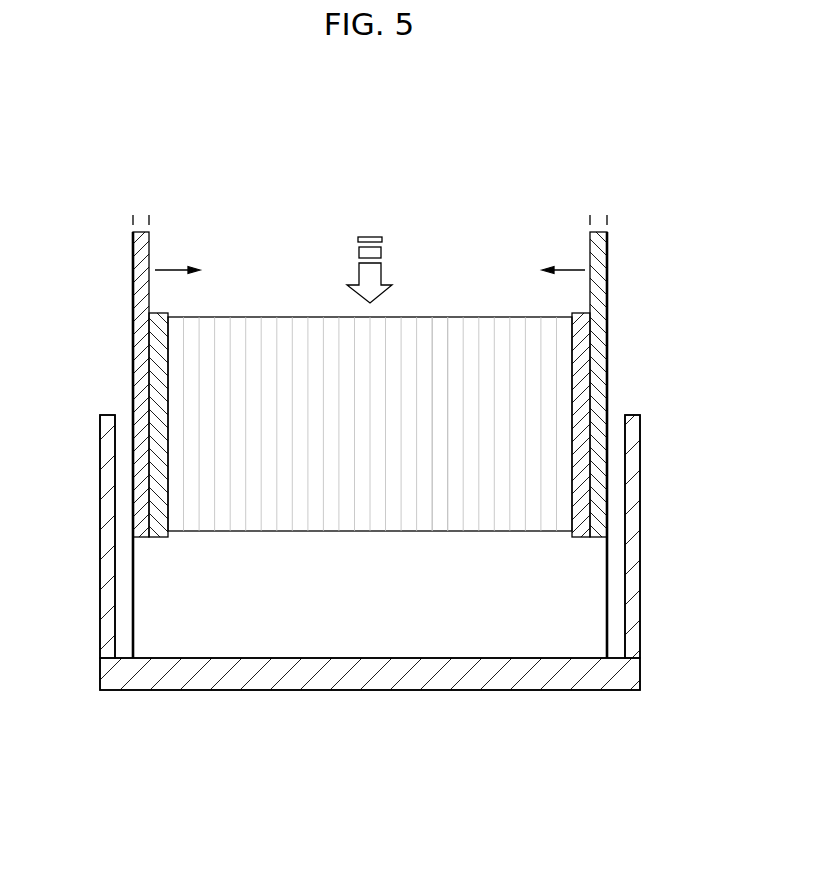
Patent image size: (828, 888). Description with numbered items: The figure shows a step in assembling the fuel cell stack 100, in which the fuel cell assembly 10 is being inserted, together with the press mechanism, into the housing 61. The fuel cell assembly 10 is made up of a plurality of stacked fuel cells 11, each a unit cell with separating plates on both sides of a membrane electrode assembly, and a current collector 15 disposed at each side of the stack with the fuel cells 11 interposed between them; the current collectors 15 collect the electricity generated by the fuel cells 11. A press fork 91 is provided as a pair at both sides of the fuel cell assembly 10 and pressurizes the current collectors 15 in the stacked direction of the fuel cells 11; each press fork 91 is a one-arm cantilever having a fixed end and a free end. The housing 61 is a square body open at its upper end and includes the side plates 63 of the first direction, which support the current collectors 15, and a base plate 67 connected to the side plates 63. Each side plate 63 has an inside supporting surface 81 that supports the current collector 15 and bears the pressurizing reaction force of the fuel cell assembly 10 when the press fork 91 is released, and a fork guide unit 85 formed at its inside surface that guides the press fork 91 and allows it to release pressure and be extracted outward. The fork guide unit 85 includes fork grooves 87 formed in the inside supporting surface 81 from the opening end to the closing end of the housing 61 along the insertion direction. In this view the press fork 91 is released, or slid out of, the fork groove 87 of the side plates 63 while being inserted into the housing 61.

The fuel cell stack 100 is at (355, 163).
The fuel cell assembly 10 is at (270, 307).
The fuel cell 11 is at (441, 322).
The current collector 15 is at (160, 349).
The housing 61 is at (651, 483).
The side plates of first direction 63 is at (100, 545).
The base plate 67 is at (355, 690).
The inside supporting surface 81 is at (146, 614).
The fork guide unit 85 is at (113, 597).
The fork groove 87 is at (123, 648).
The press fork 91 is at (141, 292).